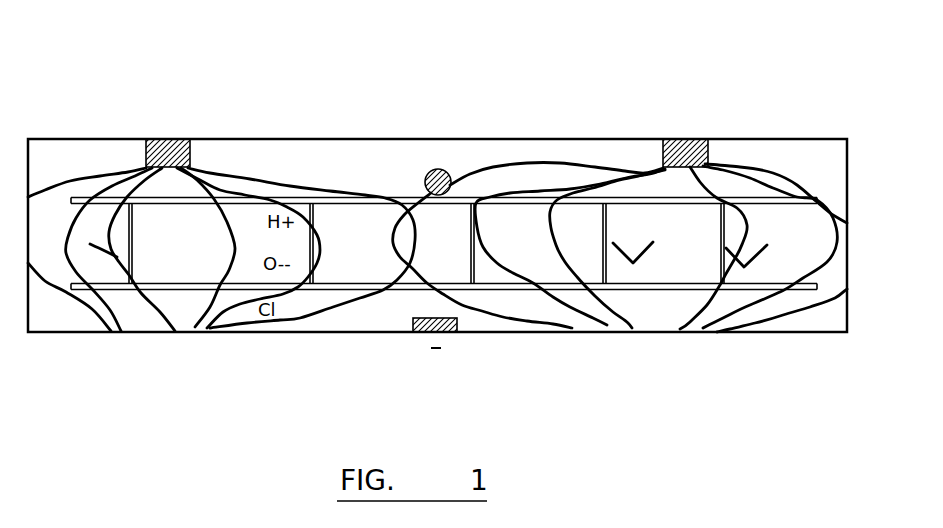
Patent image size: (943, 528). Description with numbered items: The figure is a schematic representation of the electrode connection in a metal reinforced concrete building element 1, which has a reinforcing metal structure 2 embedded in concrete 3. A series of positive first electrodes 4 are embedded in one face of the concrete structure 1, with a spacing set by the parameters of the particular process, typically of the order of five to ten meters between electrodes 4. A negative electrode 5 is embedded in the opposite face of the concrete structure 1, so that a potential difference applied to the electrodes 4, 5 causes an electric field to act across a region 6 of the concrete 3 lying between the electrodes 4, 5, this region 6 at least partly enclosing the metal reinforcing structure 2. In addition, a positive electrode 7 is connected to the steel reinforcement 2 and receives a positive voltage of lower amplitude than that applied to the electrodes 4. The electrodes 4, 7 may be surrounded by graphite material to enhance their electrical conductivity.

The metal reinforced concrete building element 1 is at (82, 126).
The reinforcing metal structure 2 is at (648, 290).
The concrete 3 is at (780, 325).
The positive first electrodes 4 is at (183, 140).
The negative electrode 5 is at (443, 332).
The region 6 is at (357, 225).
The positive electrode 7 is at (445, 172).